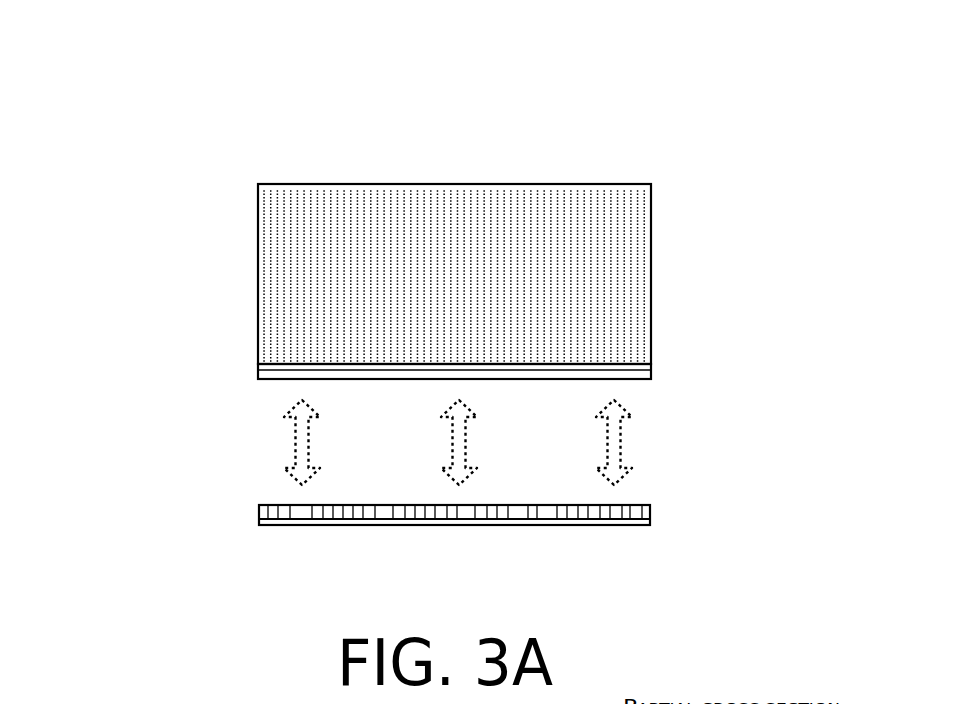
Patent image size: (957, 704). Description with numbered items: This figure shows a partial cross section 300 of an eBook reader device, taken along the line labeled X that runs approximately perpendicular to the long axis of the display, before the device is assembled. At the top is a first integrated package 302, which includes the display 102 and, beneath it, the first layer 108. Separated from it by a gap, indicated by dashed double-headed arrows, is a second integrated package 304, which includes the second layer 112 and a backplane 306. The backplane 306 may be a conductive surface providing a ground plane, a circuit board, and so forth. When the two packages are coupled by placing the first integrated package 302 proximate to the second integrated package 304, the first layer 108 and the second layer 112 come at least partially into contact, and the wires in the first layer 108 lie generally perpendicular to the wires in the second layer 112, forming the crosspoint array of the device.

The cross section 300 is at (555, 108).
The first integrated package 302 is at (258, 380).
The display 102 is at (455, 268).
The first layer 108 is at (297, 371).
The second integrated package 304 is at (248, 528).
The backplane 306 is at (594, 527).
The second layer 112 is at (286, 511).